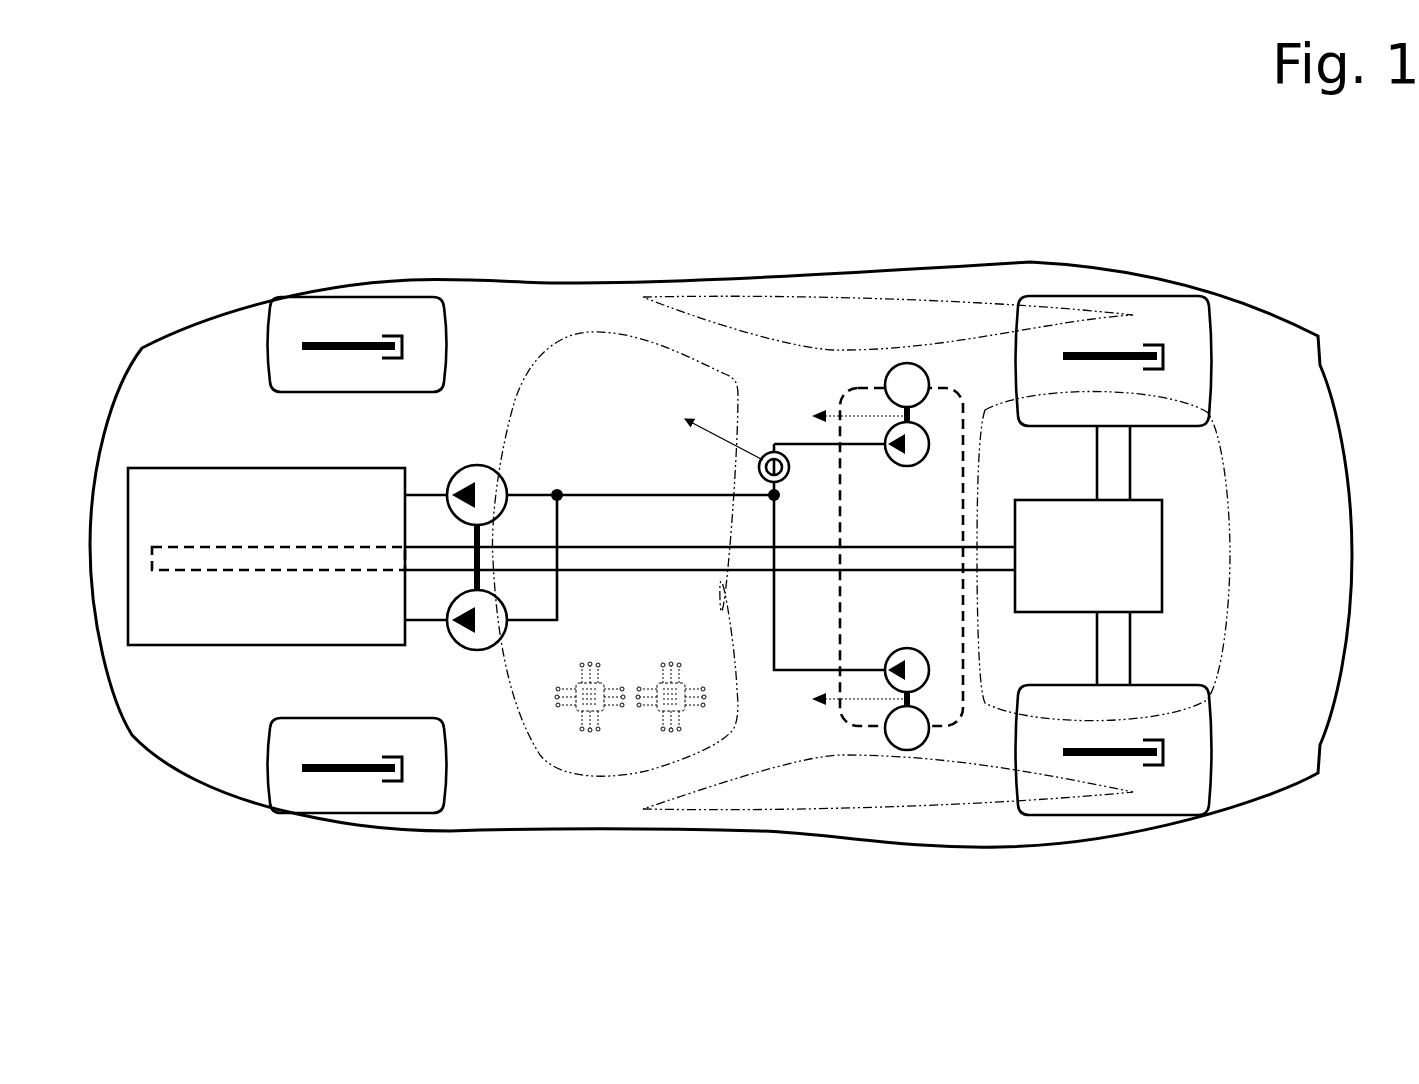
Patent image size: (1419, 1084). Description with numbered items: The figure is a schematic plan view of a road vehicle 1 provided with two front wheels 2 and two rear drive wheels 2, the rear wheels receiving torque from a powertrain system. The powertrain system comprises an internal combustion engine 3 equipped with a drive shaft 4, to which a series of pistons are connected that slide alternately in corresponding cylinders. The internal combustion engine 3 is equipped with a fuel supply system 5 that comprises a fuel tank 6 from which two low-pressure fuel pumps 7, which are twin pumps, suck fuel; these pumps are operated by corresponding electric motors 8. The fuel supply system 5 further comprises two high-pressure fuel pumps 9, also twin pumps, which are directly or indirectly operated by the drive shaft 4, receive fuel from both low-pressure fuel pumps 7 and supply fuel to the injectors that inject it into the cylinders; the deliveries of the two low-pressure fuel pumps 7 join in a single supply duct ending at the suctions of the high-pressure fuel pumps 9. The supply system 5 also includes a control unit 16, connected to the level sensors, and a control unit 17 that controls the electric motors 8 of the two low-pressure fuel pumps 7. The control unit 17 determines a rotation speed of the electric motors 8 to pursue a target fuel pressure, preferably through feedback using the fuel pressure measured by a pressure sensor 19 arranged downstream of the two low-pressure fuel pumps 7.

The road vehicle 1 is at (1312, 911).
The wheels 2 is at (294, 322).
The internal combustion engine 3 is at (205, 517).
The drive shaft 4 is at (190, 553).
The fuel supply system 5 is at (679, 204).
The fuel tank 6 is at (951, 748).
The low-pressure fuel pumps 7 is at (905, 450).
The electric motors 8 is at (885, 381).
The high-pressure fuel pumps 9 is at (485, 502).
The control unit 16 is at (668, 690).
The control unit 17 is at (591, 690).
The pressure sensor 19 is at (790, 470).